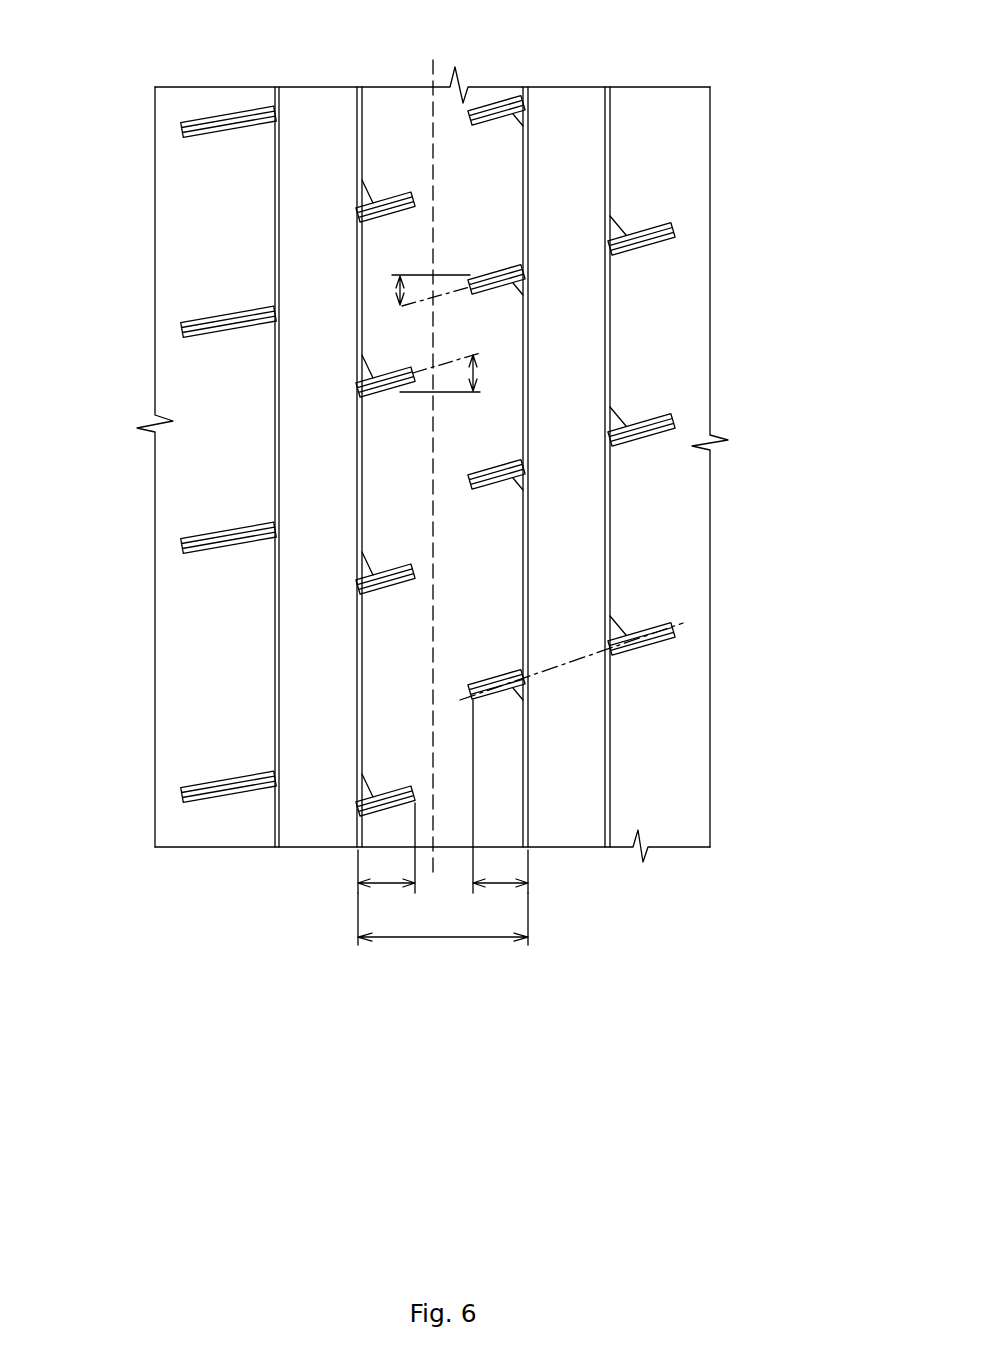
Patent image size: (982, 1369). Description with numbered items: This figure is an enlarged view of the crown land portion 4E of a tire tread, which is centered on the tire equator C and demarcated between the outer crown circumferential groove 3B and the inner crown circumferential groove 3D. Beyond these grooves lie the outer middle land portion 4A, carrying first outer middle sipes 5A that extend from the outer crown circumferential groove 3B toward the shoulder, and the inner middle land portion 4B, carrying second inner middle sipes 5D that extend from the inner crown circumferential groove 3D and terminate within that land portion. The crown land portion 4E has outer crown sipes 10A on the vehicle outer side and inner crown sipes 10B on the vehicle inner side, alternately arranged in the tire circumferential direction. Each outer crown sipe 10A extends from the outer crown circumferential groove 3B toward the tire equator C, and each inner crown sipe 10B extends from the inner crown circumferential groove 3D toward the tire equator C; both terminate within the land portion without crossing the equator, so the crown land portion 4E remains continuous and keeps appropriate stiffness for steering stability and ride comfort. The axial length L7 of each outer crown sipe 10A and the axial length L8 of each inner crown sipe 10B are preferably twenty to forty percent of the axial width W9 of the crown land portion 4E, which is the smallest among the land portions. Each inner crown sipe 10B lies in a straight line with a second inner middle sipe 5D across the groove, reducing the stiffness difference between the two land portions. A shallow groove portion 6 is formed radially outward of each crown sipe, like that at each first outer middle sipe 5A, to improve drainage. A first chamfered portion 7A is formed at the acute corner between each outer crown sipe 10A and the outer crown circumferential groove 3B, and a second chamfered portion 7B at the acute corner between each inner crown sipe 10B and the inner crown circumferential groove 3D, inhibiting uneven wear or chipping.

The outer middle land portion 4A is at (192, 103).
The outer crown circumferential groove 3B is at (318, 130).
The crown land portion 4E is at (397, 115).
The inner crown circumferential groove 3D is at (563, 120).
The inner middle land portion 4B is at (655, 115).
The tire equator C is at (432, 452).
The first outer middle sipes 5A is at (230, 790).
The second inner middle sipes 5D is at (647, 637).
The shallow groove portion 6 is at (435, 515).
The outer crown sipes 10A is at (397, 373).
The inner crown sipes 10B is at (470, 283).
The first chamfered portion 7A is at (366, 574).
The second chamfered portion 7B is at (525, 478).
The length of outer crown sipe L7 is at (386, 860).
The length of inner crown sipe L8 is at (500, 809).
The width of crown land portion W9 is at (443, 932).